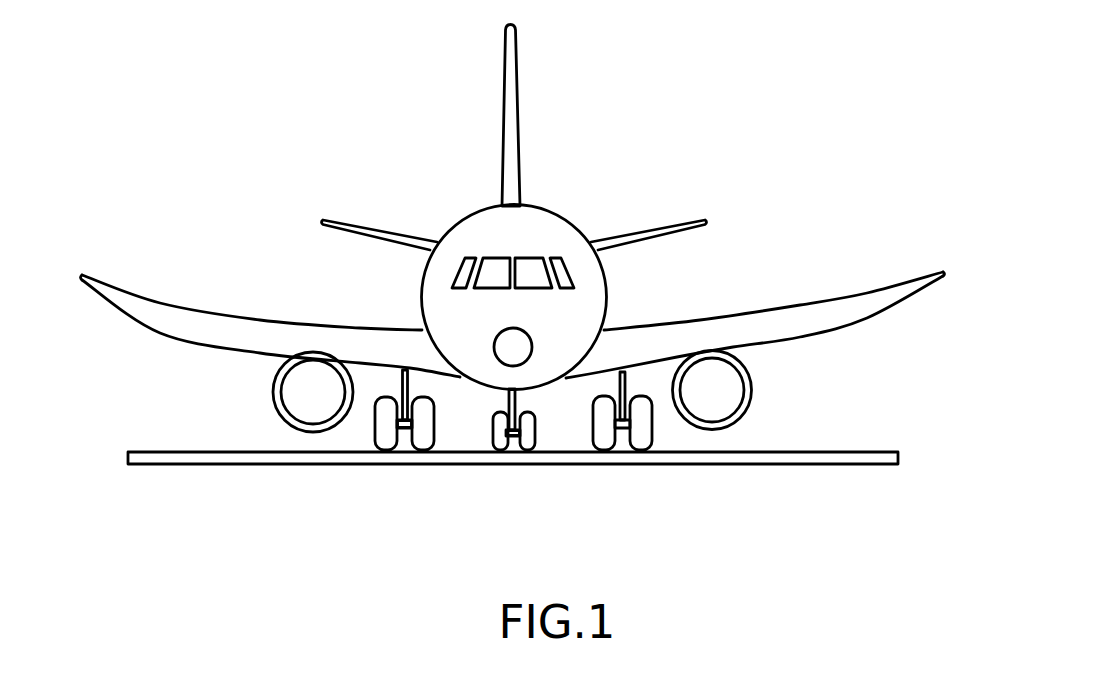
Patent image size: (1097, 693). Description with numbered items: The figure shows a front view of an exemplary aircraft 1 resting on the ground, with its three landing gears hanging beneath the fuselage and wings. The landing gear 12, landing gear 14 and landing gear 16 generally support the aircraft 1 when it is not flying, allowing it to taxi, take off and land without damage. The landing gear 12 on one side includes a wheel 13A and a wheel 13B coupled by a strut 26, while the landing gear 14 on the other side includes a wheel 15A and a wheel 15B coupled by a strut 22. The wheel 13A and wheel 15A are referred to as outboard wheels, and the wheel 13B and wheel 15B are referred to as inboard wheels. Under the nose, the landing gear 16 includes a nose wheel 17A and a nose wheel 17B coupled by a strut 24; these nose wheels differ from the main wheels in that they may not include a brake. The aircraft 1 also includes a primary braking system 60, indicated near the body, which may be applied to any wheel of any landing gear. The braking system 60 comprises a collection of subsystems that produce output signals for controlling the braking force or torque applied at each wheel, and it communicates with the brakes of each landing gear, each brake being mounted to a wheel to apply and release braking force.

The aircraft 1 is at (345, 113).
The landing gear 12 is at (705, 400).
The wheel 13A is at (653, 433).
The wheel 13B is at (612, 415).
The landing gear 14 is at (321, 476).
The wheel 15A is at (373, 440).
The wheel 15B is at (437, 440).
The landing gear 16 is at (559, 423).
The nose wheel 17A is at (537, 443).
The nose wheel 17B is at (493, 445).
The strut 22 is at (402, 433).
The strut 24 is at (512, 440).
The strut 26 is at (624, 430).
The primary braking system 60 is at (476, 387).